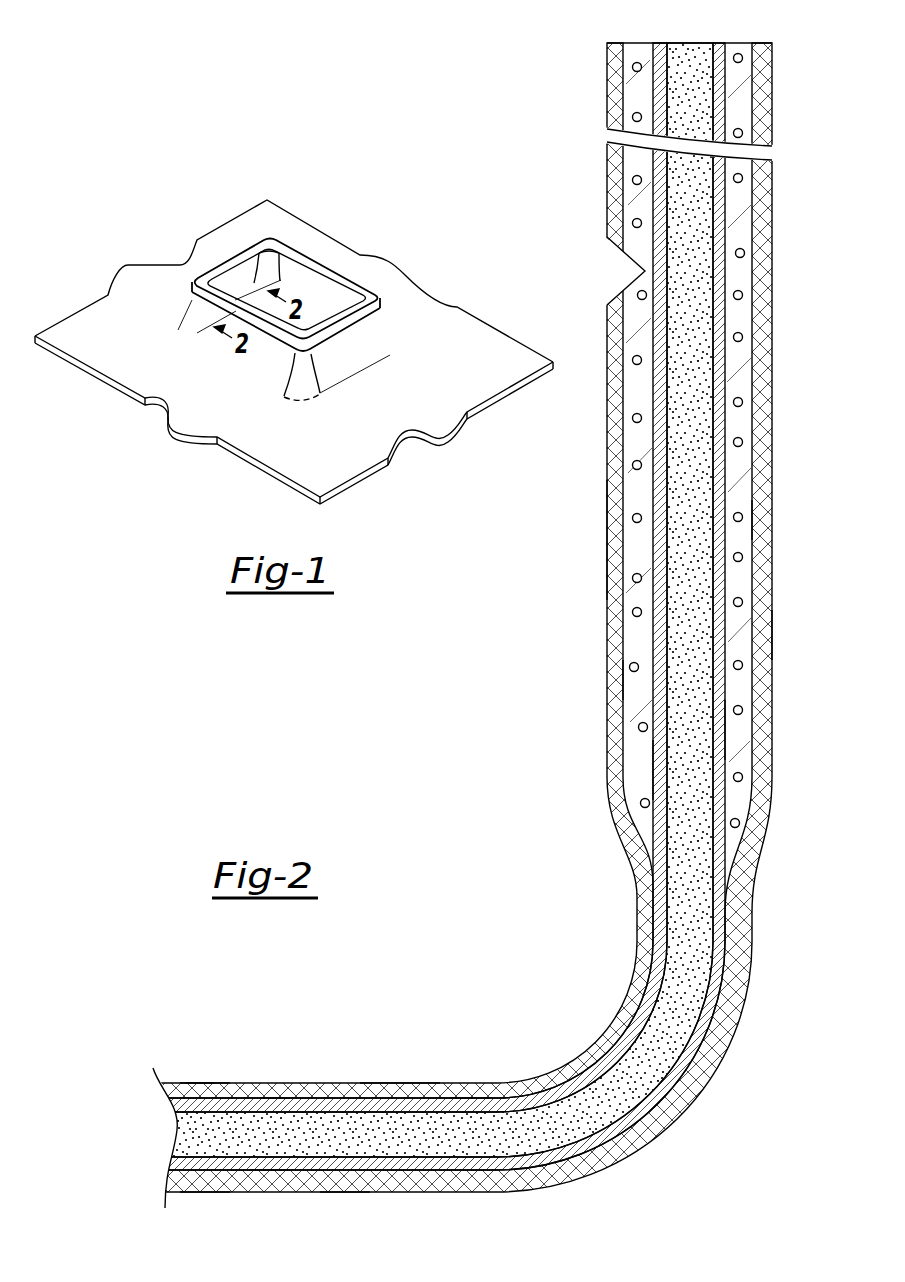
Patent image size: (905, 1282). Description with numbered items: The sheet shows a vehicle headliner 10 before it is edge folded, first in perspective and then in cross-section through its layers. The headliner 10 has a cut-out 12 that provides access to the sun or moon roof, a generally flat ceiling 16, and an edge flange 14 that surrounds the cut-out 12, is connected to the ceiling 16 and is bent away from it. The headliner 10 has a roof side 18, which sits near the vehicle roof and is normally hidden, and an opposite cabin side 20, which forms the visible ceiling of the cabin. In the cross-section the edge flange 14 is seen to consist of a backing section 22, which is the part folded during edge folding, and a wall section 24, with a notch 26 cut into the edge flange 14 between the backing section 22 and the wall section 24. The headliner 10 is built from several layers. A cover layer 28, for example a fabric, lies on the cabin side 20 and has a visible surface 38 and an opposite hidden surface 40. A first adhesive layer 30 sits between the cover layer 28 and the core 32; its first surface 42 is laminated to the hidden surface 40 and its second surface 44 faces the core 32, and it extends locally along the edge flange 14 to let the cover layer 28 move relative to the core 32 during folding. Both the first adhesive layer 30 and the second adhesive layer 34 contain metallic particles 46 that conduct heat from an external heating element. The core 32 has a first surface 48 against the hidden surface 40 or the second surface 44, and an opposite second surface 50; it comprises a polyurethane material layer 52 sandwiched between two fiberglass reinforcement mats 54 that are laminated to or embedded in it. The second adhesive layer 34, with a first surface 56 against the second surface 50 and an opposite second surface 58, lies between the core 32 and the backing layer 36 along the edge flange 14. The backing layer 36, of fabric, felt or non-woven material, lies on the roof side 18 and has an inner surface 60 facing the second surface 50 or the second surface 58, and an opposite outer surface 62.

In FIG. 1, the headliner 10 is at (118, 206).
In FIG. 2, the headliner 10 is at (472, 611).
In FIG. 1, the cut-out 12 is at (243, 277).
In FIG. 1, the edge flange 14 is at (357, 343).
In FIG. 2, the edge flange 14 is at (589, 575).
In FIG. 1, the ceiling 16 is at (199, 399).
In FIG. 2, the ceiling 16 is at (344, 1067).
In FIG. 1, the roof side 18 is at (280, 222).
In FIG. 2, the roof side 18 is at (198, 1082).
In FIG. 1, the cabin side 20 is at (120, 391).
In FIG. 2, the cabin side 20 is at (345, 1194).
In FIG. 2, the backing section 22 is at (607, 173).
In FIG. 2, the wall section 24 is at (607, 536).
In FIG. 1, the notch 26 is at (207, 303).
In FIG. 2, the notch 26 is at (632, 277).
In FIG. 2, the cover layer 28 is at (760, 635).
In FIG. 2, the first adhesive layer 30 is at (737, 728).
In FIG. 2, the core 32 is at (152, 1095).
In FIG. 2, the second adhesive layer 34 is at (643, 775).
In FIG. 2, the backing layer 36 is at (380, 1090).
In FIG. 2, the visible surface 38 is at (772, 585).
In FIG. 2, the hidden surface 40 is at (747, 519).
In FIG. 2, the first surface 42 is at (752, 468).
In FIG. 2, the second surface 44 is at (725, 427).
In FIG. 2, the particles 46 is at (640, 295).
In FIG. 2, the first surface 48 is at (268, 1172).
In FIG. 2, the second surface 50 is at (275, 1097).
In FIG. 2, the polyurethane material layer 52 is at (240, 1130).
In FIG. 2, the reinforcement mats 54 is at (172, 1097).
In FIG. 2, the first surface 56 is at (650, 622).
In FIG. 2, the second surface 58 is at (623, 682).
In FIG. 2, the inner surface 60 is at (470, 1098).
In FIG. 2, the outer surface 62 is at (420, 1082).